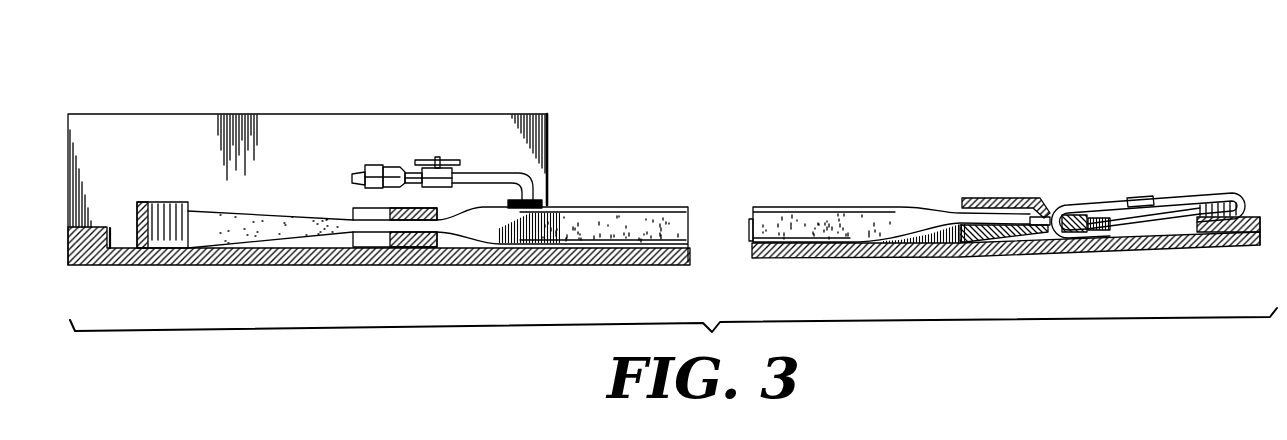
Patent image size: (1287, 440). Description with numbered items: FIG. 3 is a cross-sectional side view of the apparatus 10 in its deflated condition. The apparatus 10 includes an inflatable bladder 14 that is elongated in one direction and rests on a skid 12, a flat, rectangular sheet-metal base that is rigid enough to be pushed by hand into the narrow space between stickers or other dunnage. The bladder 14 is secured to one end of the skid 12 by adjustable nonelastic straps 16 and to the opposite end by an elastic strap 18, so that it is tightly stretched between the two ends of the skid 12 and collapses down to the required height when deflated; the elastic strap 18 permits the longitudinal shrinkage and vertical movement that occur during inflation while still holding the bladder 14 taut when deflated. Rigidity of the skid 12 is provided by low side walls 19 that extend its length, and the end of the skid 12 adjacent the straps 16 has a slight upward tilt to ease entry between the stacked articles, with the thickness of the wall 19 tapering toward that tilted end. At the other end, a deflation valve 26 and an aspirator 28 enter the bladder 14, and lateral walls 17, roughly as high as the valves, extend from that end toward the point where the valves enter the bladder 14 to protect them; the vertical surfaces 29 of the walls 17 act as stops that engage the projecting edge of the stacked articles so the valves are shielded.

The apparatus 10 is at (764, 187).
The skid 12 is at (488, 264).
The inflatable bladder 14 is at (602, 207).
The adjustable nonelastic straps 16 is at (1117, 203).
The walls 17 is at (182, 128).
The elastic strap 18 is at (228, 212).
The side walls 19 is at (123, 240).
The deflation valve 26 is at (438, 160).
The aspirator 28 is at (376, 163).
The vertical surfaces 29 is at (552, 137).